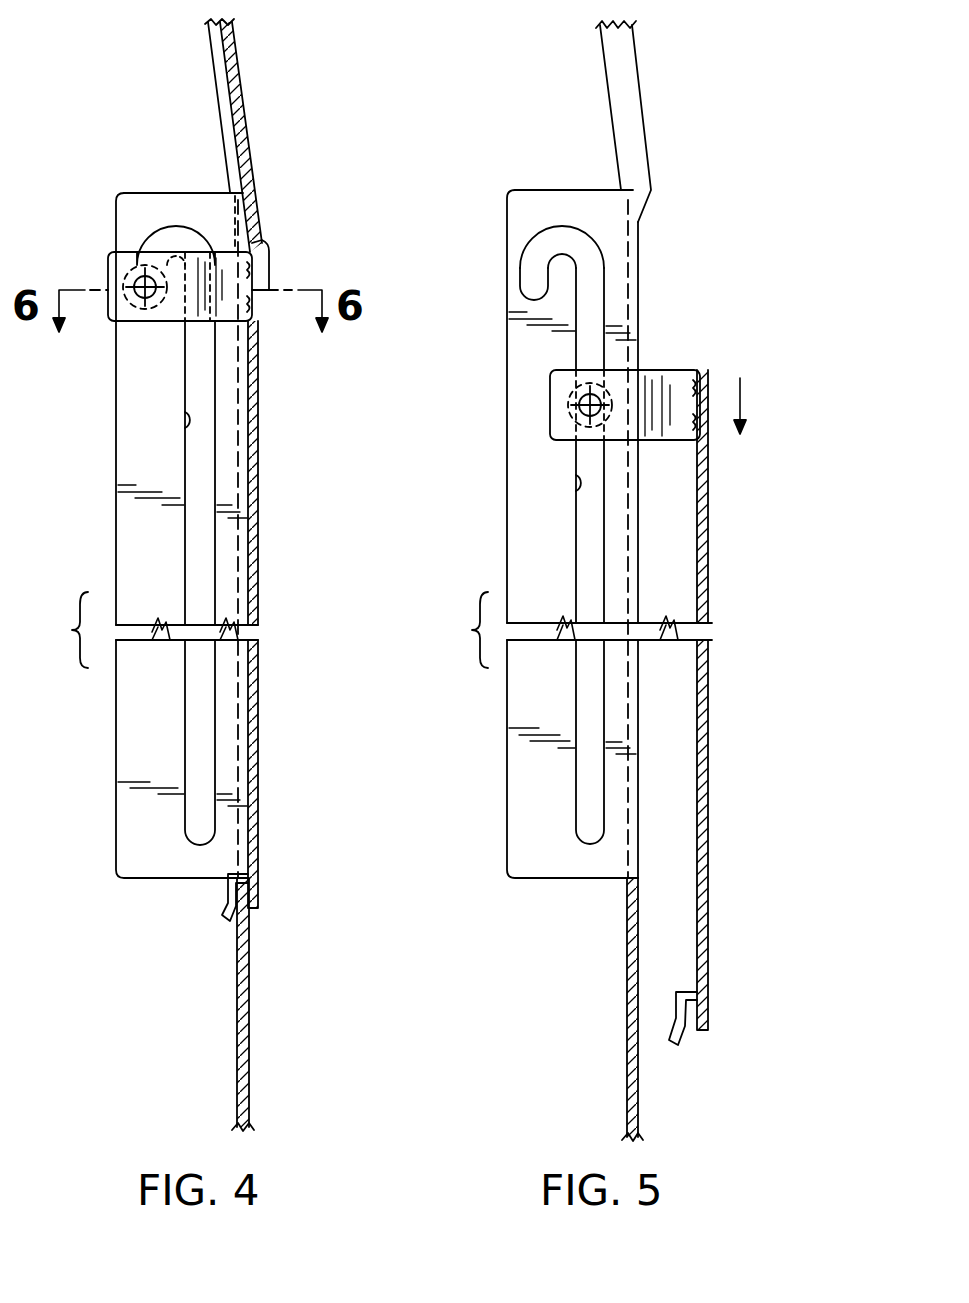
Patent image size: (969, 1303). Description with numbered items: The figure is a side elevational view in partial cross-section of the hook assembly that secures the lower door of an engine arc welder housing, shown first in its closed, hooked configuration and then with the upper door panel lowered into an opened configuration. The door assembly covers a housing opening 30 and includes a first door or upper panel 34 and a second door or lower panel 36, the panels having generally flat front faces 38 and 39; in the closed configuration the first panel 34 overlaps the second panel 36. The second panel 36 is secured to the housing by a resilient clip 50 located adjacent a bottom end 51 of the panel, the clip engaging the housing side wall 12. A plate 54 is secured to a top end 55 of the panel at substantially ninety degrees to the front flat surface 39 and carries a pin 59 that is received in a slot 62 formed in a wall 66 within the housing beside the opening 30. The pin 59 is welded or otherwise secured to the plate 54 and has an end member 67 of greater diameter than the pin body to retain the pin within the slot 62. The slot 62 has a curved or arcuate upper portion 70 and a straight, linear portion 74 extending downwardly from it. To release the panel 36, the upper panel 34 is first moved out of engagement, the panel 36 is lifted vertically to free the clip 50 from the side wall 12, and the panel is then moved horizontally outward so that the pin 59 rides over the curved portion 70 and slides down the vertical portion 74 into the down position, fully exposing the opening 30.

In FIG. 4, the side wall 12 is at (245, 1086).
In FIG. 5, the side wall 12 is at (621, 97).
In FIG. 5, the housing opening 30 is at (621, 155).
In FIG. 4, the first door or upper panel 34 is at (247, 107).
In FIG. 4, the second door or lower panel 36 is at (259, 720).
In FIG. 5, the second door or lower panel 36 is at (710, 824).
In FIG. 4, the front face 38 is at (237, 55).
In FIG. 4, the front face 39 is at (260, 576).
In FIG. 5, the front face 39 is at (709, 728).
In FIG. 4, the resilient clip 50 is at (225, 913).
In FIG. 5, the resilient clip 50 is at (684, 1046).
In FIG. 4, the bottom end 51 is at (258, 912).
In FIG. 5, the bottom end 51 is at (698, 1030).
In FIG. 4, the plate 54 is at (223, 262).
In FIG. 5, the plate 54 is at (672, 388).
In FIG. 4, the top end 55 is at (259, 240).
In FIG. 5, the top end 55 is at (703, 366).
In FIG. 4, the pin 59 is at (140, 322).
In FIG. 5, the pin 59 is at (586, 405).
In FIG. 4, the slot 62 is at (192, 428).
In FIG. 5, the slot 62 is at (580, 490).
In FIG. 4, the wall 66 is at (135, 530).
In FIG. 5, the wall 66 is at (530, 470).
In FIG. 4, the end member 67 is at (112, 276).
In FIG. 5, the end member 67 is at (603, 412).
In FIG. 4, the curved upper portion 70 is at (172, 232).
In FIG. 5, the curved upper portion 70 is at (562, 235).
In FIG. 4, the linear portion 74 is at (198, 690).
In FIG. 5, the linear portion 74 is at (585, 690).